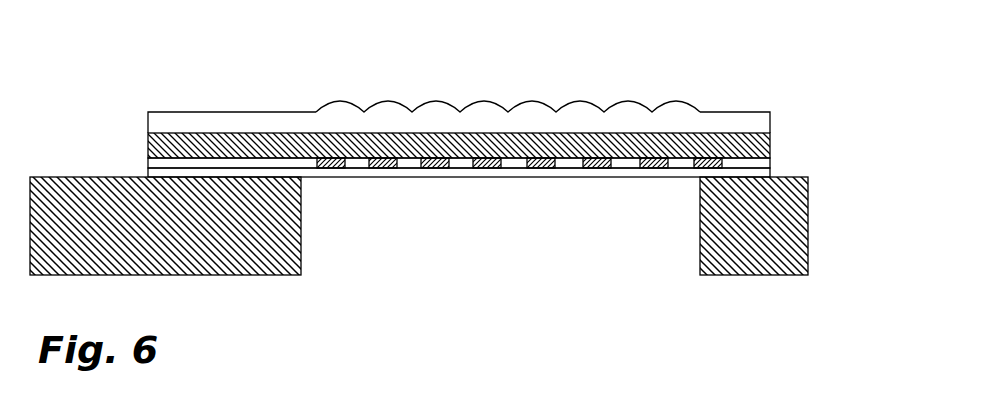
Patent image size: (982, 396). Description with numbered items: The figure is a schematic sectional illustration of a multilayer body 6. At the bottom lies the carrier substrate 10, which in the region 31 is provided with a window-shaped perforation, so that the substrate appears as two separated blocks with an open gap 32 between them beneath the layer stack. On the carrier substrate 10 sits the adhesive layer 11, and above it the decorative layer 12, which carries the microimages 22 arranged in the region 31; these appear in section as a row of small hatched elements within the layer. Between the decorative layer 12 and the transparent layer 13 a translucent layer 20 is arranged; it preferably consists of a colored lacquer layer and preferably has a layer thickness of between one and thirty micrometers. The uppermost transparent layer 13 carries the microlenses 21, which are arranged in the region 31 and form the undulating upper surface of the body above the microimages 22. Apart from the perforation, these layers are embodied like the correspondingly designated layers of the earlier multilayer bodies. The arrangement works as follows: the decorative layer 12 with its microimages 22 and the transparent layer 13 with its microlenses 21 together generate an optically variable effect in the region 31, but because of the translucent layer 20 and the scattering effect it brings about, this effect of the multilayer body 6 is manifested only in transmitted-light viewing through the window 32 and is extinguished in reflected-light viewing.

The multilayer body 6 is at (753, 42).
The carrier substrate 10 is at (808, 227).
The adhesive layer 11 is at (774, 171).
The decorative layer 12 is at (773, 163).
The transparent layer 13 is at (777, 117).
The translucent layer 20 is at (773, 145).
The microlenses 21 is at (677, 95).
The microimages 22 is at (430, 170).
The region 31 is at (478, 75).
The cavity 32 is at (478, 270).